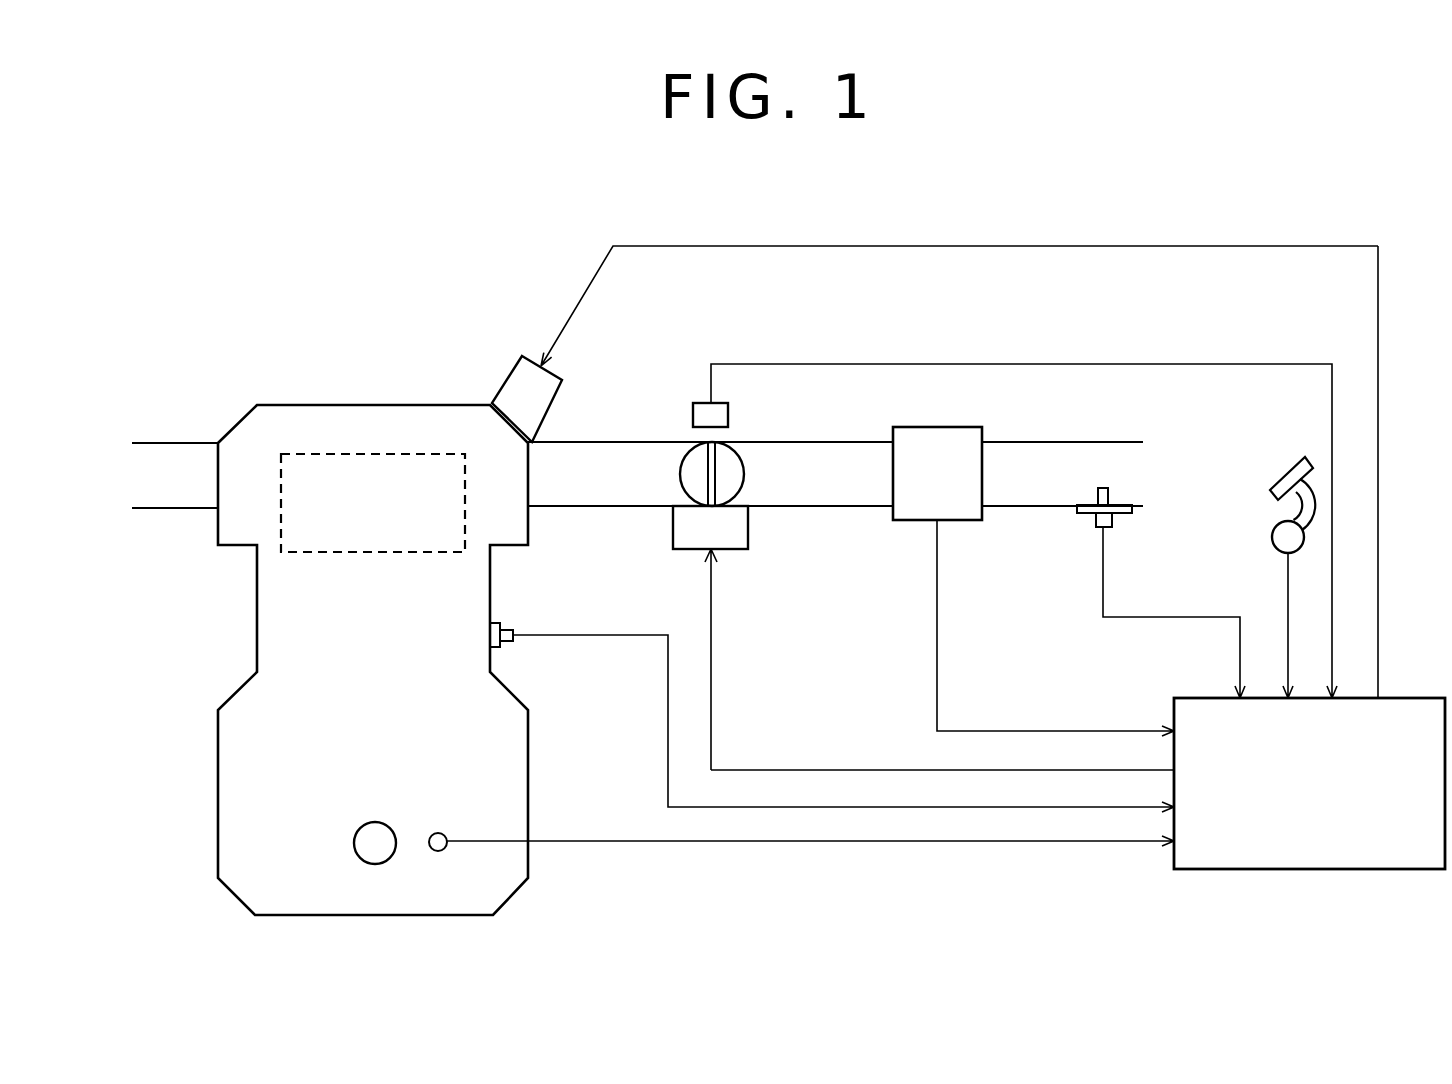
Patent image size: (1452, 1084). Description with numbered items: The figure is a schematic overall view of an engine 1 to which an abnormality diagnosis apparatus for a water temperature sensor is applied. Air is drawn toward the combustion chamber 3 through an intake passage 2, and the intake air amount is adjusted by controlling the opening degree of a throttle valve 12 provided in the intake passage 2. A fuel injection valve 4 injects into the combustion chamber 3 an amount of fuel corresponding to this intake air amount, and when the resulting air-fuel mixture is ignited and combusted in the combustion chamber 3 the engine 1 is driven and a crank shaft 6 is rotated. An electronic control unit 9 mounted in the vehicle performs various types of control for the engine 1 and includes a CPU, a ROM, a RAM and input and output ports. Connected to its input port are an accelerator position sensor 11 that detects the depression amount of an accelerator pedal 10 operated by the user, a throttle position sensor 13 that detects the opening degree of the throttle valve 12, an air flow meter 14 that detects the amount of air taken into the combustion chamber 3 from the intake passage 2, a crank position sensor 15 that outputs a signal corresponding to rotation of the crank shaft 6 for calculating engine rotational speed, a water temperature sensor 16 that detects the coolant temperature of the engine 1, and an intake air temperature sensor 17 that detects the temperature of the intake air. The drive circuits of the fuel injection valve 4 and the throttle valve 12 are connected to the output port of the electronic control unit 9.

The engine 1 is at (285, 349).
The intake passage 2 is at (812, 506).
The combustion chamber 3 is at (402, 550).
The fuel injection valve 4 is at (530, 357).
The crank shaft 6 is at (373, 822).
The electronic control unit 9 is at (1275, 869).
The accelerator pedal 10 is at (1295, 458).
The accelerator position sensor 11 is at (1273, 530).
The throttle valve 12 is at (680, 466).
The throttle position sensor 13 is at (702, 403).
The air flow meter 14 is at (940, 427).
The crank position sensor 15 is at (438, 833).
The water temperature sensor 16 is at (492, 623).
The intake air temperature sensor 17 is at (1097, 518).